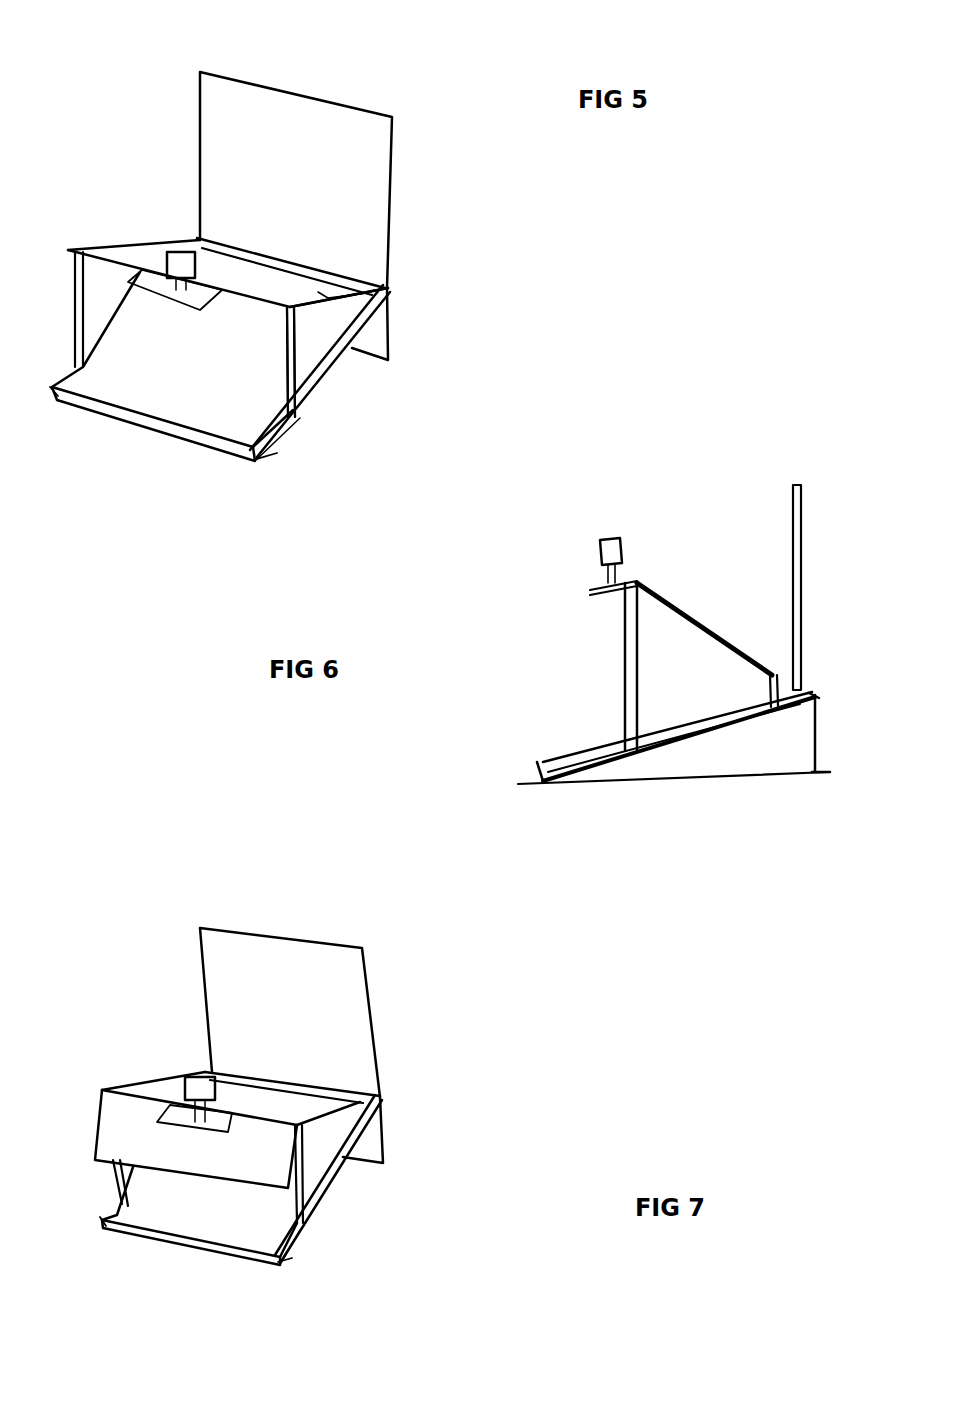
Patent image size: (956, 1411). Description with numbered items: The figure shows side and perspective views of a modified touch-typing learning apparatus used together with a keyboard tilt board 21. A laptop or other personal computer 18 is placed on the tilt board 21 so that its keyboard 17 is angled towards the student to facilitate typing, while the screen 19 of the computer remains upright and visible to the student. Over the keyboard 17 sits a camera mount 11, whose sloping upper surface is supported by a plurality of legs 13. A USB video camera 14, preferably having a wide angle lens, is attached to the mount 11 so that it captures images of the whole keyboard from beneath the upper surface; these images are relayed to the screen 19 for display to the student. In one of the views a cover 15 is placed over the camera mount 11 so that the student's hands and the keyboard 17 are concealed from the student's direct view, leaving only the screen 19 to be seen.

In FIG. 5, the camera mount 11 is at (387, 290).
In FIG. 5, the legs 13 is at (295, 375).
In FIG. 6, the legs 13 is at (623, 653).
In FIG. 5, the USB video camera 14 is at (175, 253).
In FIG. 6, the USB video camera 14 is at (608, 532).
In FIG. 7, the USB video camera 14 is at (193, 1077).
In FIG. 7, the cover 15 is at (157, 1080).
In FIG. 5, the keyboard 17 is at (135, 375).
In FIG. 6, the keyboard 17 is at (590, 747).
In FIG. 7, the keyboard 17 is at (195, 1203).
In FIG. 5, the personal computer 18 is at (395, 242).
In FIG. 7, the personal computer 18 is at (383, 1048).
In FIG. 5, the screen 19 is at (265, 113).
In FIG. 6, the screen 19 is at (790, 530).
In FIG. 7, the screen 19 is at (260, 965).
In FIG. 5, the keyboard tilt board 21 is at (333, 370).
In FIG. 6, the keyboard tilt board 21 is at (672, 752).
In FIG. 7, the keyboard tilt board 21 is at (345, 1158).